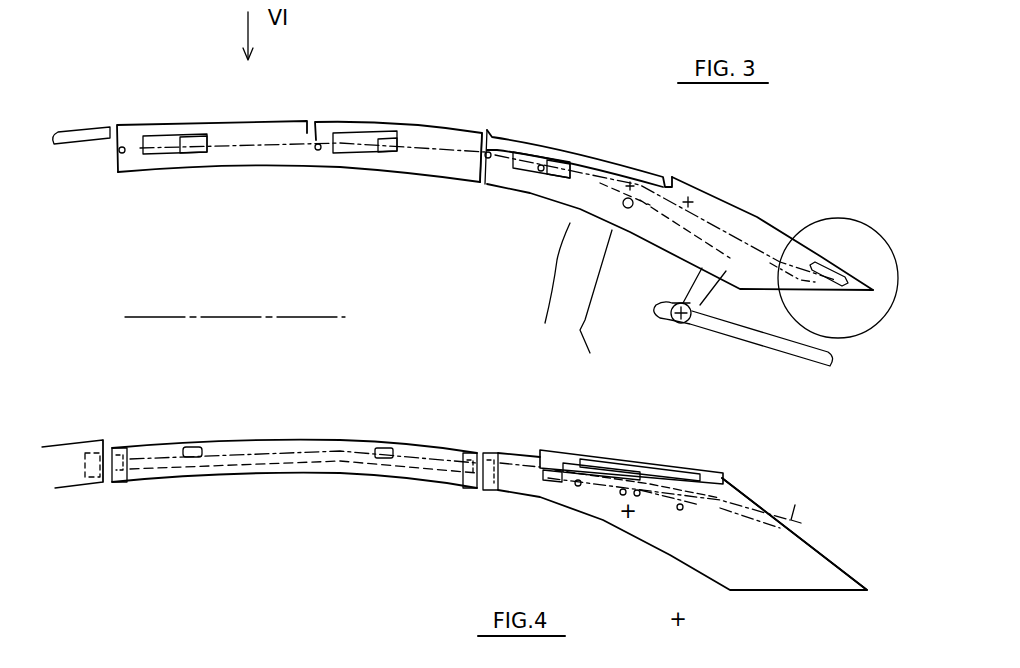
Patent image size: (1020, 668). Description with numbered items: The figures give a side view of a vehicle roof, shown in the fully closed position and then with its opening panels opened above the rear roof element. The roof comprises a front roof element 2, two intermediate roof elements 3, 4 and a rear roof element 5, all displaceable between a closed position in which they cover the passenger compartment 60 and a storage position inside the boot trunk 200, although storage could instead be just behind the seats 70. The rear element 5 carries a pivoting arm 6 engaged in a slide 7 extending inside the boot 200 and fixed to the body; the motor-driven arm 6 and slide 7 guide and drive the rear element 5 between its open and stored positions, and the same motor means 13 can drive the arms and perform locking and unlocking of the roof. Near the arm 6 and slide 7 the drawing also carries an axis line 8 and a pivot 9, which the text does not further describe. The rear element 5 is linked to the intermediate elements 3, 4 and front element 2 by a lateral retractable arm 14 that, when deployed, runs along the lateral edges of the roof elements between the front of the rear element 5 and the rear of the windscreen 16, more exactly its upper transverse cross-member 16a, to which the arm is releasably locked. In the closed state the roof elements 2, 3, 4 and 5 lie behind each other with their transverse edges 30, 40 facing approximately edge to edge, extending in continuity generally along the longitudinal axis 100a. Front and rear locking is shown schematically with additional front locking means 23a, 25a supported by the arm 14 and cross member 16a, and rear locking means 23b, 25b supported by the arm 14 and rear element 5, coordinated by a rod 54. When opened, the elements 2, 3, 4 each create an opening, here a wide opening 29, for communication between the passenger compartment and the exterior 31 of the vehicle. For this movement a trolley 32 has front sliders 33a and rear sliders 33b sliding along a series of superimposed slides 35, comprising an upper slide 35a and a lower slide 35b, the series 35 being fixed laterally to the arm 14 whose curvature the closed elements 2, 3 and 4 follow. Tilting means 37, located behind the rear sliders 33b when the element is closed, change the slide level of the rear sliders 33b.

In FIG. 3, the front roof element 2 is at (170, 123).
In FIG. 4, the front roof element 2 is at (640, 460).
In FIG. 3, the intermediate roof element 3 is at (407, 120).
In FIG. 4, the intermediate roof element 3 is at (742, 487).
In FIG. 3, the intermediate roof element 4 is at (547, 137).
In FIG. 4, the intermediate roof element 4 is at (800, 503).
In FIG. 3, the rear roof element 5 is at (767, 220).
In FIG. 4, the rear roof element 5 is at (650, 533).
In FIG. 3, the pivoting arm 6 is at (697, 278).
In FIG. 3, the slide 7 is at (760, 342).
In FIG. 3, the pivot axis 8 is at (627, 197).
In FIG. 3, the pivot joint 9 is at (676, 335).
In FIG. 3, the motor means 13 is at (840, 262).
In FIG. 3, the lateral retractable arm 14 is at (160, 165).
In FIG. 4, the lateral retractable arm 14 is at (156, 470).
In FIG. 4, the windscreen 16 is at (62, 440).
In FIG. 3, the upper transverse element of the windscreen 16a is at (83, 127).
In FIG. 4, the front locking means 23a is at (124, 485).
In FIG. 4, the rear locking means 23b is at (467, 473).
In FIG. 4, the front locking means 25a is at (88, 482).
In FIG. 4, the rear locking means 25b is at (488, 483).
In FIG. 4, the wide opening 29 is at (252, 470).
In FIG. 3, the transverse edge 30 is at (482, 133).
In FIG. 4, the exterior of the vehicle 31 is at (373, 403).
In FIG. 3, the trolley 32 is at (137, 168).
In FIG. 3, the front slider 33a is at (118, 153).
In FIG. 3, the rear slider 33b is at (182, 157).
In FIG. 3, the series of superimposed slides 35 is at (428, 153).
In FIG. 4, the upper slide 35a is at (232, 443).
In FIG. 4, the lower slide 35b is at (400, 458).
In FIG. 3, the tilting means 37 is at (197, 128).
In FIG. 4, the tilting means 37 is at (387, 438).
In FIG. 3, the transverse edge 40 is at (492, 135).
In FIG. 4, the rod 54 is at (292, 462).
In FIG. 3, the passenger compartment 60 is at (385, 246).
In FIG. 4, the passenger compartment 60 is at (370, 566).
In FIG. 3, the seats 70 is at (581, 306).
In FIG. 4, the longitudinal axis 100a is at (197, 317).
In FIG. 4, the boot trunk 200 is at (100, 440).